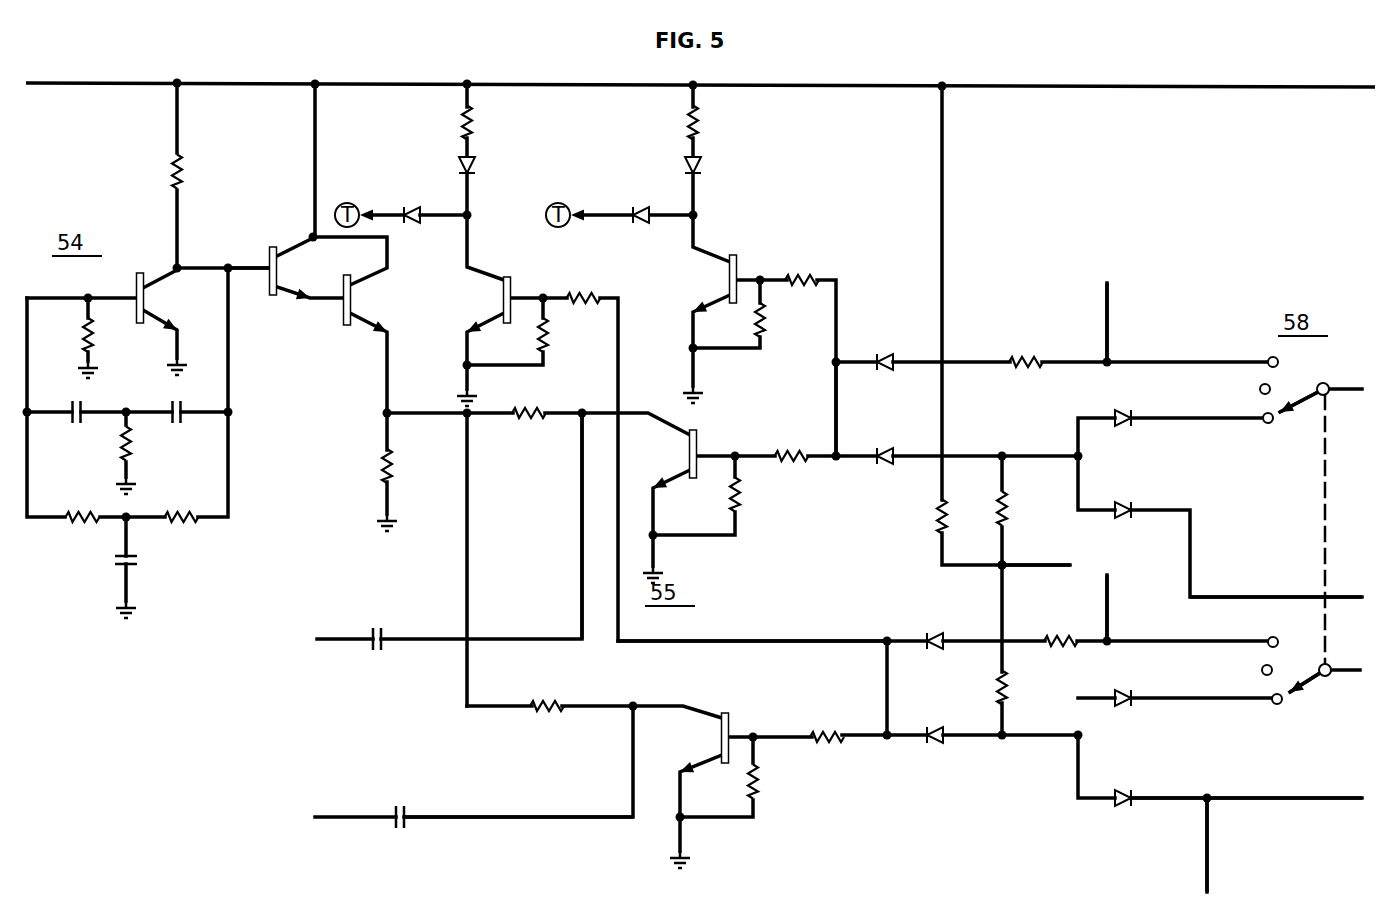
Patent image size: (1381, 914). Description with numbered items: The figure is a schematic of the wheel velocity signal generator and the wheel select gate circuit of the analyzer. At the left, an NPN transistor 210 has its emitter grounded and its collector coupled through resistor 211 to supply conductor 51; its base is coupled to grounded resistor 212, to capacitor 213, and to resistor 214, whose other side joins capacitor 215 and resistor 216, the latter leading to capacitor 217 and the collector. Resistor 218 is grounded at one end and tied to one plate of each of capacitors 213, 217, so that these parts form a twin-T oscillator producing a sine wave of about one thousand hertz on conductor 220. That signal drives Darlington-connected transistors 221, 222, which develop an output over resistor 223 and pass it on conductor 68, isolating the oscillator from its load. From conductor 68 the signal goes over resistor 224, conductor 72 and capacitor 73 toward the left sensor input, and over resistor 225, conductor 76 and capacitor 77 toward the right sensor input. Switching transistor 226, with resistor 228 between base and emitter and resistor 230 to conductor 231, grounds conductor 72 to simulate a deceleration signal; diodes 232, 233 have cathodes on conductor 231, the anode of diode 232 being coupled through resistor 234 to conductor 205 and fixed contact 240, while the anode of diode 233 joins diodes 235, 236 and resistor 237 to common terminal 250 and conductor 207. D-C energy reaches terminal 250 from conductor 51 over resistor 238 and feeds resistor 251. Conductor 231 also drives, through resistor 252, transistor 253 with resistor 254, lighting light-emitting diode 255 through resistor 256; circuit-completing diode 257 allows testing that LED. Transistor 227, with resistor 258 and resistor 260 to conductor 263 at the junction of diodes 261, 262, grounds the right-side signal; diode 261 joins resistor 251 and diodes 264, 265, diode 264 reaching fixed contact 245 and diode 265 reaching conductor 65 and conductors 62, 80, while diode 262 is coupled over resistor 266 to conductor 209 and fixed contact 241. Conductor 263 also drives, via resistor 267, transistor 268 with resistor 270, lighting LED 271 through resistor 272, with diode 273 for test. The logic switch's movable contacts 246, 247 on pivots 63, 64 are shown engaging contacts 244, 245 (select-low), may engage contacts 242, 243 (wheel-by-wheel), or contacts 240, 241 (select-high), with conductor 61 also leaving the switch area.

The conductor 51 is at (850, 85).
The conductor 61 is at (1228, 596).
The conductor 62 is at (1316, 802).
The switch pivot 63 is at (1340, 388).
The switch pivot 64 is at (1343, 676).
The conductor 65 is at (1178, 796).
The conductor 68 is at (430, 412).
The conductor 72 is at (544, 636).
The capacitor 73 is at (373, 626).
The conductor 76 is at (556, 815).
The capacitor 77 is at (398, 804).
The conductor 80 is at (1209, 858).
The conductor 205 is at (1110, 320).
The conductor 207 is at (1036, 565).
The conductor 209 is at (1109, 616).
The transistor 210 is at (165, 298).
The resistor 211 is at (199, 172).
The resistor 212 is at (69, 335).
The capacitor 213 is at (80, 426).
The resistor 214 is at (82, 505).
The capacitor 215 is at (147, 563).
The resistor 216 is at (180, 505).
The capacitor 217 is at (180, 403).
The resistor 218 is at (147, 445).
The conductor 220 is at (250, 263).
The transistor 221 is at (300, 271).
The transistor 222 is at (372, 300).
The resistor 223 is at (411, 466).
The resistor 224 is at (530, 401).
The resistor 225 is at (550, 693).
The transistor 226 is at (670, 454).
The transistor 227 is at (703, 738).
The resistor 228 is at (757, 495).
The resistor 230 is at (790, 443).
The conductor 231 is at (836, 396).
The diode 232 is at (885, 349).
The diode 233 is at (885, 443).
The resistor 234 is at (1023, 348).
The diode 235 is at (1120, 431).
The diode 236 is at (1120, 498).
The resistor 237 is at (1023, 509).
The resistor 238 is at (916, 517).
The fixed contact 240 is at (1270, 358).
The fixed contact 241 is at (1270, 638).
The fixed contact 242 is at (1260, 389).
The fixed contact 243 is at (1262, 670).
The fixed contact 244 is at (1268, 424).
The fixed contact 245 is at (1277, 705).
The movable contact 246 is at (1302, 402).
The movable contact 247 is at (1312, 685).
The common terminal 250 is at (1000, 569).
The resistor 251 is at (1023, 688).
The resistor 252 is at (805, 267).
The transistor 253 is at (710, 279).
The resistor 254 is at (781, 320).
The light-emitting diode 255 is at (717, 168).
The resistor 256 is at (715, 123).
The circuit-completing diode 257 is at (640, 228).
The resistor 258 is at (775, 782).
The resistor 260 is at (825, 724).
The diode 261 is at (932, 749).
The diode 262 is at (932, 629).
The conductor 263 is at (740, 640).
The diode 264 is at (1120, 687).
The diode 265 is at (1120, 787).
The resistor 266 is at (1060, 627).
The resistor 267 is at (588, 287).
The transistor 268 is at (482, 300).
The resistor 270 is at (564, 335).
The light-emitting diode 271 is at (491, 168).
The resistor 272 is at (490, 123).
The circuit-completing diode 273 is at (420, 200).